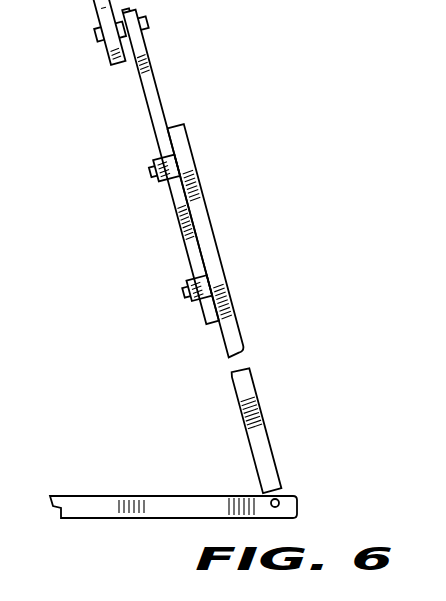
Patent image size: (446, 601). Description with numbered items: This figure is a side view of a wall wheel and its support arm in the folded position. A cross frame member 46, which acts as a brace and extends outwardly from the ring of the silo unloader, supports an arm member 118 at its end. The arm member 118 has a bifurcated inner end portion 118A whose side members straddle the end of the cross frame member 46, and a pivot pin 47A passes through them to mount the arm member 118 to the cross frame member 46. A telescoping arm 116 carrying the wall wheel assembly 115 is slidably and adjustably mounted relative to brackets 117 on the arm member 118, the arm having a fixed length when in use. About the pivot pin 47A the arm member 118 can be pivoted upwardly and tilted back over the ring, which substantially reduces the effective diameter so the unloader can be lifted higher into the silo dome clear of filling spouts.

The wall wheel assembly 115 is at (105, 49).
The telescoping arm 116 is at (182, 242).
The bracket 117 is at (148, 168).
The arm member 118 is at (215, 252).
The bifurcated inner end portion 118A is at (262, 420).
The cross frame member 46 is at (82, 503).
The pivot pin 47A is at (297, 503).